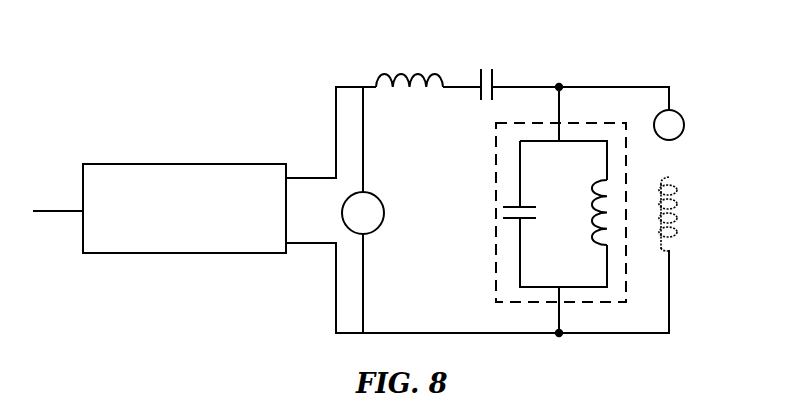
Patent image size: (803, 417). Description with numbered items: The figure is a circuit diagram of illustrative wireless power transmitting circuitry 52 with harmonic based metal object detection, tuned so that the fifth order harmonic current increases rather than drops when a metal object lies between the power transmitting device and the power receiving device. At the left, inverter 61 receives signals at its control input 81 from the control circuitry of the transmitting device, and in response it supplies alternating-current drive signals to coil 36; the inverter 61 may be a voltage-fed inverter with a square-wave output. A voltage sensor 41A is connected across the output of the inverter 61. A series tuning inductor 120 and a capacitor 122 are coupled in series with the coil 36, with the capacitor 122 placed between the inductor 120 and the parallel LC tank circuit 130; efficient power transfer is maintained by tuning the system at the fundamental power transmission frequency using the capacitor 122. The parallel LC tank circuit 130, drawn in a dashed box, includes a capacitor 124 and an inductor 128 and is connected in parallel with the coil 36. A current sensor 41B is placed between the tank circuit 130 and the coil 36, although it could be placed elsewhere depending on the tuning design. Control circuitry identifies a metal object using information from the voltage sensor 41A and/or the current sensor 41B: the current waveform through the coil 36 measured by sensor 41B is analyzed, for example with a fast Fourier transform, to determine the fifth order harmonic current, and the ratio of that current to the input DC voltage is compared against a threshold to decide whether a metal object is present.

The control input 81 is at (60, 216).
The inverter 61 is at (190, 237).
The wireless power transmitting circuitry 52 is at (262, 92).
The series tuning inductor 120 is at (410, 62).
The capacitor 122 is at (486, 60).
The parallel LC tank circuit 130 is at (604, 122).
The voltage sensor 41A is at (379, 192).
The current sensor 41B is at (684, 125).
The capacitor 124 is at (495, 228).
The inductor 128 is at (613, 245).
The coil 36 is at (685, 218).